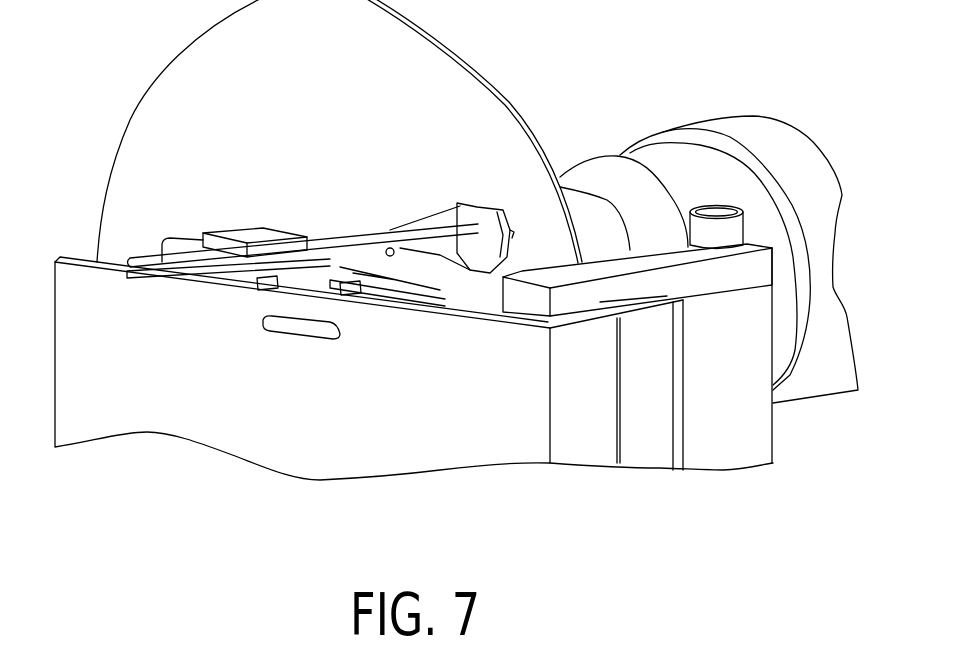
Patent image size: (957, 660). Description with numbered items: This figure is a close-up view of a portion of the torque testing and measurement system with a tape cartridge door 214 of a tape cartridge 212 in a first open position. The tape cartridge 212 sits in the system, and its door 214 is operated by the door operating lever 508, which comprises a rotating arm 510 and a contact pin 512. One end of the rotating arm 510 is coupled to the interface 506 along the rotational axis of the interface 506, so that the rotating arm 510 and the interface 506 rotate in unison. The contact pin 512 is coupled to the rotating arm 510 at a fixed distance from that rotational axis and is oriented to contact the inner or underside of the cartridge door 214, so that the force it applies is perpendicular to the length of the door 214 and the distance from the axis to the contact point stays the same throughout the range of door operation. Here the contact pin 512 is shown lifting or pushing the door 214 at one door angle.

The interface 506 is at (333, 138).
The tape cartridge 212 is at (206, 378).
The tape cartridge door 214 is at (343, 243).
The door operating lever 508 is at (437, 194).
The rotating arm 510 is at (490, 208).
The contact pin 512 is at (422, 250).